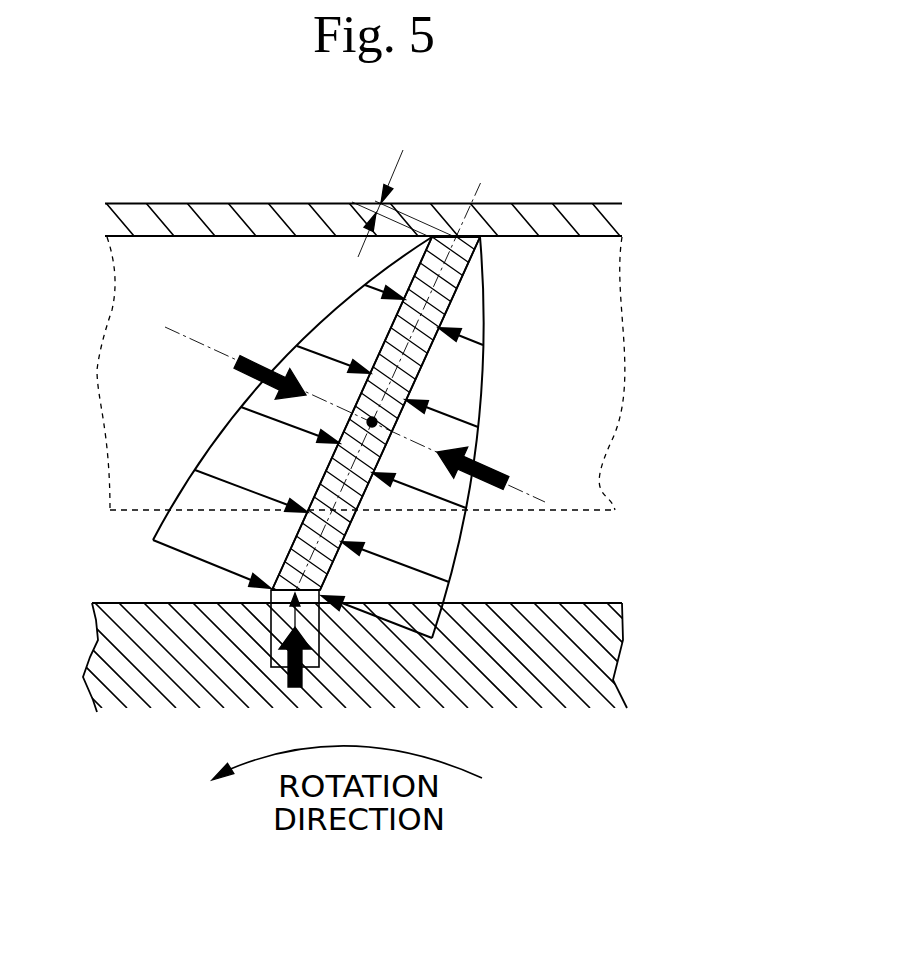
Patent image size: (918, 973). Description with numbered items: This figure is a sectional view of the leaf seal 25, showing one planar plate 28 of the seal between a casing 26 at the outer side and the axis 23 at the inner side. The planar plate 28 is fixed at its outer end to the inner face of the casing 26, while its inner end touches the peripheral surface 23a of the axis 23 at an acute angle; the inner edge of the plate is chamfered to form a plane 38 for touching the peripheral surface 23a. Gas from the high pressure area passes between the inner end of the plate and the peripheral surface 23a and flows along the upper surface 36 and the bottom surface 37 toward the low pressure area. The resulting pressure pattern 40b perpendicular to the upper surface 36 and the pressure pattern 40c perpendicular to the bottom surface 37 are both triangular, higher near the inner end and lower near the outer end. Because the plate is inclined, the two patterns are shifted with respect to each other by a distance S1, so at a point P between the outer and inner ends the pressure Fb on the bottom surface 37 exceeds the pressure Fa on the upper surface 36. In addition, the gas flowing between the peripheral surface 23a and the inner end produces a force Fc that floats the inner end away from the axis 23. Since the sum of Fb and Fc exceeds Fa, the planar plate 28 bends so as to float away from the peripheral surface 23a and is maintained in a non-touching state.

The leaf seal 25 is at (217, 163).
The casing 26 is at (533, 220).
The axis 23 is at (592, 648).
The peripheral surface 23a is at (122, 603).
The planar plate 28 is at (418, 372).
The upper surface 36 is at (417, 280).
The bottom surface 37 is at (456, 283).
The plane 38 is at (271, 625).
The pressure pattern 40b is at (225, 438).
The pressure pattern 40c is at (456, 567).
The distance S1 is at (380, 193).
The point P is at (372, 422).
The pressure Fa is at (252, 367).
The pressure Fb is at (508, 478).
The force Fc is at (282, 667).